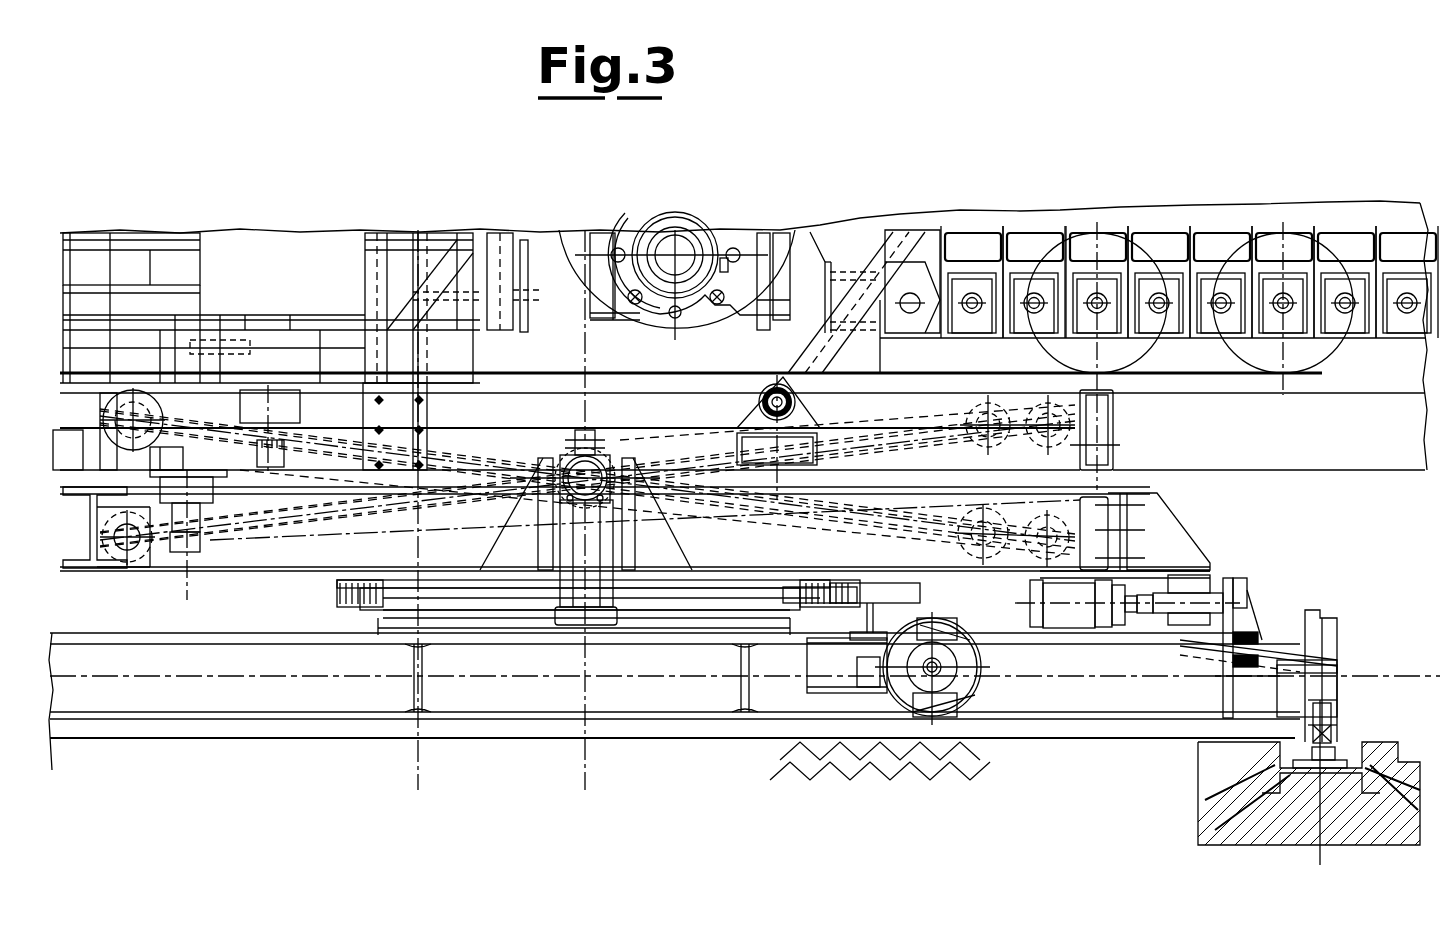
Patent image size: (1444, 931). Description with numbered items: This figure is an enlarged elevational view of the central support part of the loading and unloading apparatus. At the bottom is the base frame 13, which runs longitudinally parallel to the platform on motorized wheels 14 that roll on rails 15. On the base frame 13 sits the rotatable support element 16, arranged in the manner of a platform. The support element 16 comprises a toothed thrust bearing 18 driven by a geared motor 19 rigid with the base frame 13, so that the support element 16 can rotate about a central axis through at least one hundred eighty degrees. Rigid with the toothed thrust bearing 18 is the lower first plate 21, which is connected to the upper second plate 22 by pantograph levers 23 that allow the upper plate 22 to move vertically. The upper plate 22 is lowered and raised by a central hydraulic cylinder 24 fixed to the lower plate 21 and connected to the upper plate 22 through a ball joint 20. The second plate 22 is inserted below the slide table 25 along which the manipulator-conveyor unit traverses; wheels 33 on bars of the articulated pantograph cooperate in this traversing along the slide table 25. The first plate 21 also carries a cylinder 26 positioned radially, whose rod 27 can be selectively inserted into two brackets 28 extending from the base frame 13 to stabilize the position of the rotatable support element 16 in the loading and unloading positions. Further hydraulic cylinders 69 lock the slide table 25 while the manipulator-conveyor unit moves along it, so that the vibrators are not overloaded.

The base frame 13 is at (248, 697).
The motorized wheels 14 is at (1330, 640).
The rails 15 is at (1325, 752).
The support element 16 is at (1175, 487).
The toothed thrust bearing 18 is at (500, 598).
The geared motor 19 is at (968, 690).
The ball joint 20 is at (633, 465).
The lower first plate 21 is at (98, 568).
The upper second plate 22 is at (1105, 448).
The pantograph levers 23 is at (278, 560).
The hydraulic cylinder 24 is at (600, 598).
The slide table 25 is at (1232, 378).
The cylinder 26 is at (1058, 612).
The rod 27 is at (1188, 600).
The brackets 28 is at (1262, 630).
The wheels 33 is at (1245, 253).
The hydraulic cylinders 69 is at (176, 552).